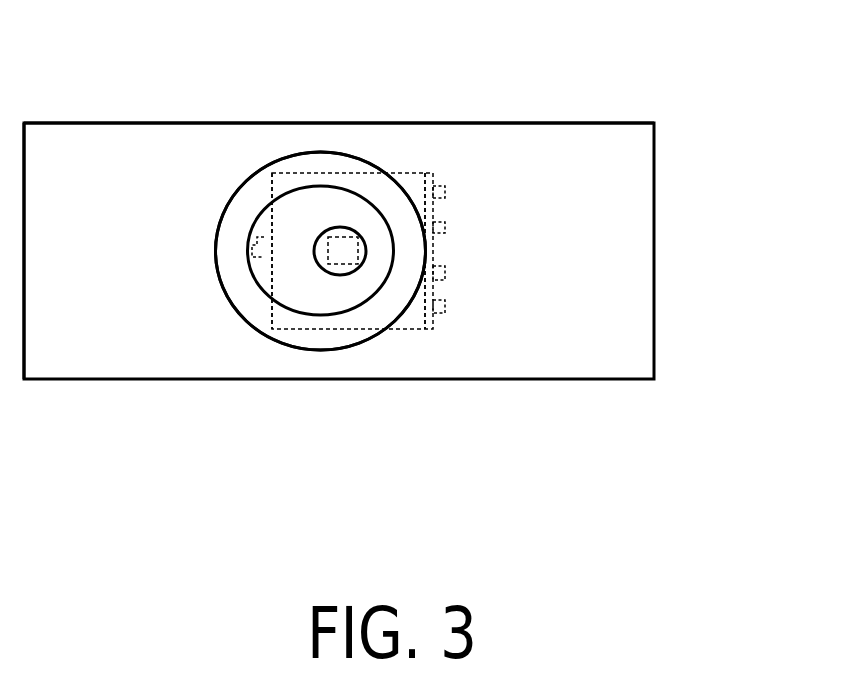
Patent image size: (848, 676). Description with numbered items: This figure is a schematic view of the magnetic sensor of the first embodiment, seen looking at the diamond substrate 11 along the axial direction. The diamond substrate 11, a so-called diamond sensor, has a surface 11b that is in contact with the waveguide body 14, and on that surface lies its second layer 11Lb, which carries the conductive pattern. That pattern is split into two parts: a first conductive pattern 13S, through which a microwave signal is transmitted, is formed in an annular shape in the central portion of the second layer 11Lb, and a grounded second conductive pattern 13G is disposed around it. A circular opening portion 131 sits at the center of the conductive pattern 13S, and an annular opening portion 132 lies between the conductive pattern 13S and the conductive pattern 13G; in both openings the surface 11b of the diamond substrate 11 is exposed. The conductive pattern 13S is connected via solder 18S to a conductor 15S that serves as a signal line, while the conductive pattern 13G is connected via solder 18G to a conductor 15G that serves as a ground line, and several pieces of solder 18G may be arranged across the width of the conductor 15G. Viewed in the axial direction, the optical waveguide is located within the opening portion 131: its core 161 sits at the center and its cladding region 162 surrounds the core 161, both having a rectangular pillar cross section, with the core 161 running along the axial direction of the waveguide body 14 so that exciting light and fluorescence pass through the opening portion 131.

The diamond substrate 11 is at (638, 147).
The second layer 11Lb is at (83, 137).
The surface 11b is at (163, 137).
The second conductive pattern 13G is at (117, 345).
The first conductive pattern 13S is at (313, 300).
The opening portion 131 is at (318, 242).
The opening portion 132 is at (255, 308).
The waveguide body 14 is at (405, 322).
The conductor 15G is at (433, 187).
The conductor 15S is at (270, 245).
The core 161 is at (347, 243).
The cladding region 162 is at (395, 325).
The solder 18G is at (445, 228).
The solder 18S is at (262, 243).